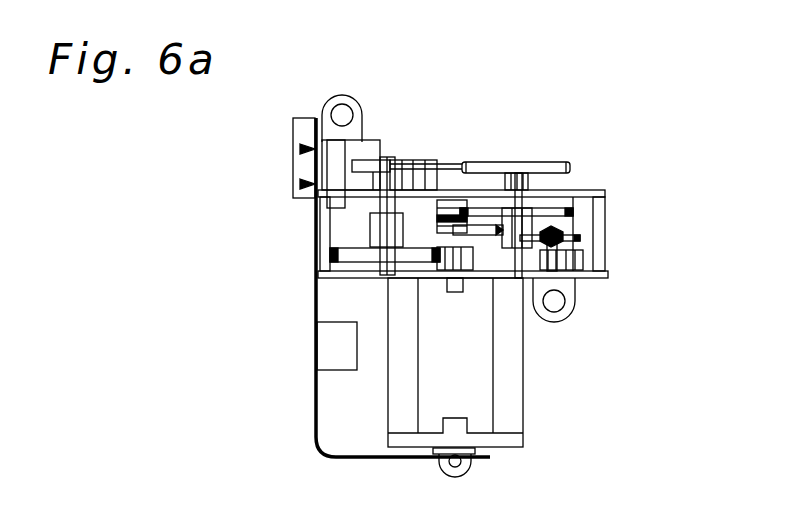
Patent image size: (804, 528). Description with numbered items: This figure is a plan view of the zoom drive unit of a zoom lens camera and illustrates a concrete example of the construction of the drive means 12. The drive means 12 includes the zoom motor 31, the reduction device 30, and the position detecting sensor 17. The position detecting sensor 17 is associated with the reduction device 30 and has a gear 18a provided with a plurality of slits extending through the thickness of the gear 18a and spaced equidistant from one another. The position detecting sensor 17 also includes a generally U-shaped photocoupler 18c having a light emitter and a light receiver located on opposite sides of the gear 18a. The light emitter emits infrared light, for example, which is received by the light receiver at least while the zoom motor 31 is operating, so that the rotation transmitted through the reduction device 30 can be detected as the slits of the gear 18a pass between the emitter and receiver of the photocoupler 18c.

The drive means 12 is at (302, 292).
The position detecting sensor 17 is at (412, 141).
The gear 18a is at (462, 160).
The photocoupler 18c is at (365, 123).
The reduction device 30 is at (609, 234).
The zoom motor 31 is at (512, 396).